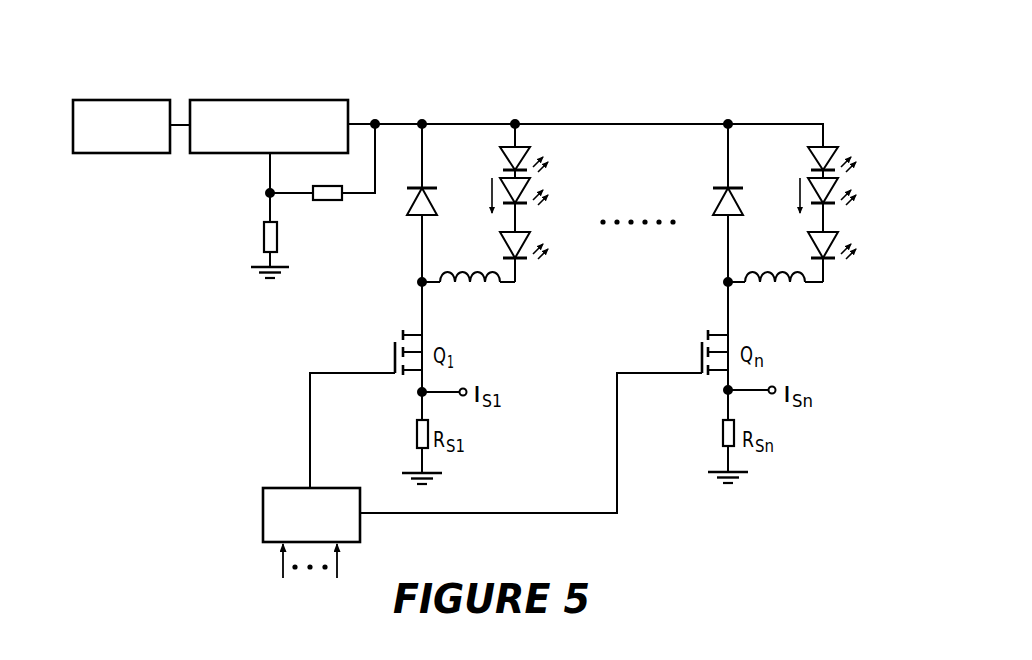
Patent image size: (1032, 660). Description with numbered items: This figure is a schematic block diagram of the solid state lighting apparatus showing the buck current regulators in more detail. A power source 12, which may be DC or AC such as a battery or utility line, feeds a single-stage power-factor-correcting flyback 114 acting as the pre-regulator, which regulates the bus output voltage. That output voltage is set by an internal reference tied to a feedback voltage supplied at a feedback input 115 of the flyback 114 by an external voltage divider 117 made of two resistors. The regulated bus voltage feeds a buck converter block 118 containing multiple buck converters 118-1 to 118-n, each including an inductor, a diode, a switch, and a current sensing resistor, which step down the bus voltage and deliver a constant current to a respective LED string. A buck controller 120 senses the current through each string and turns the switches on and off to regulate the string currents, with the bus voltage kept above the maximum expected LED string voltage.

The power source 12 is at (125, 100).
The single-stage power-factor-correcting flyback 114 is at (271, 100).
The feedback input 115 is at (265, 154).
The external voltage divider 117 is at (317, 224).
The buck converter block 118 is at (586, 103).
The buck converter 118-1 is at (483, 293).
The buck converter 118-n is at (788, 293).
The buck controller 120 is at (284, 488).